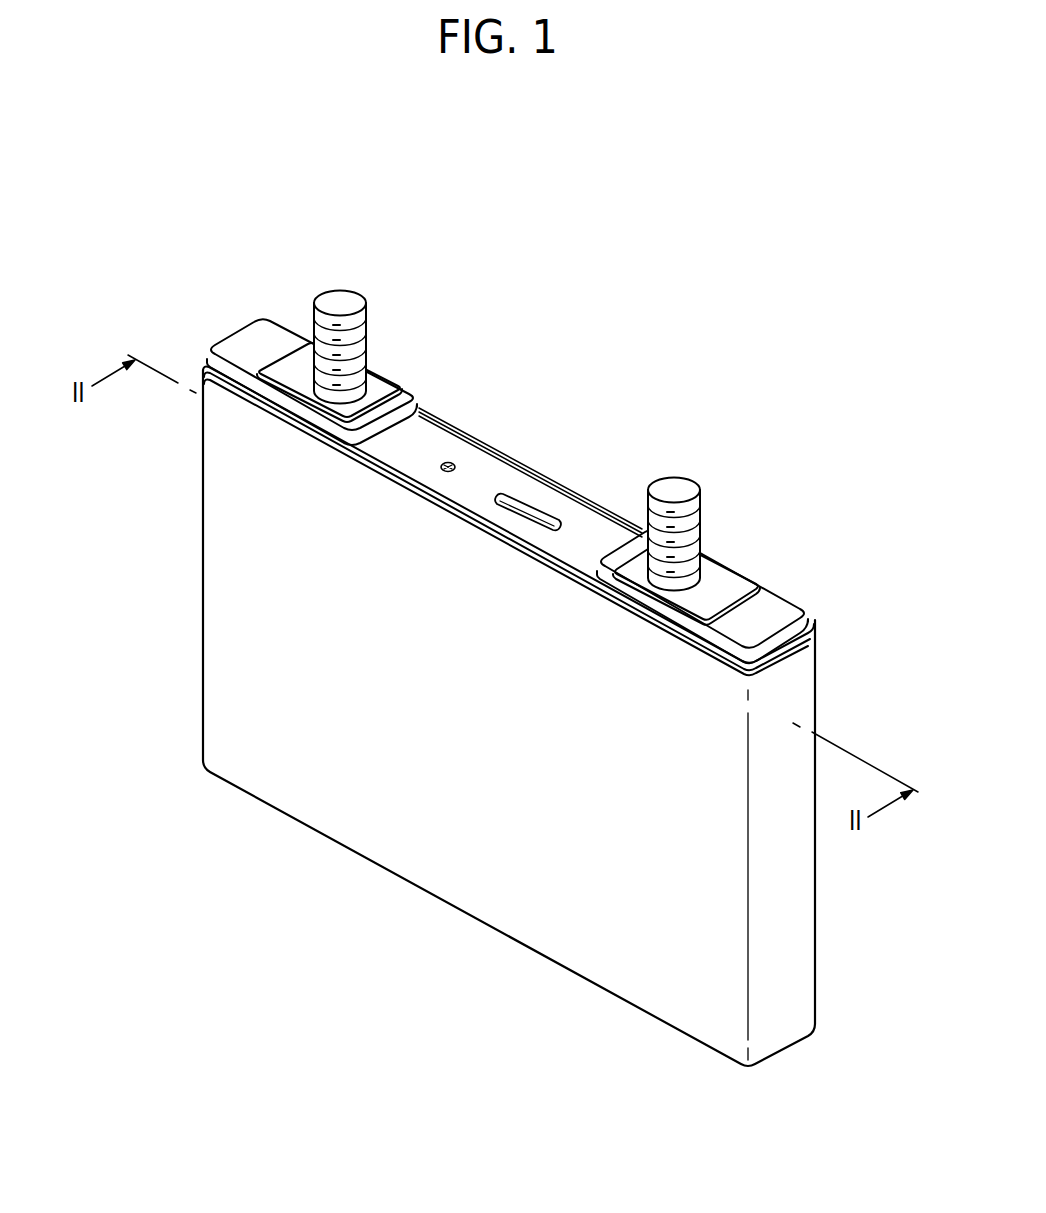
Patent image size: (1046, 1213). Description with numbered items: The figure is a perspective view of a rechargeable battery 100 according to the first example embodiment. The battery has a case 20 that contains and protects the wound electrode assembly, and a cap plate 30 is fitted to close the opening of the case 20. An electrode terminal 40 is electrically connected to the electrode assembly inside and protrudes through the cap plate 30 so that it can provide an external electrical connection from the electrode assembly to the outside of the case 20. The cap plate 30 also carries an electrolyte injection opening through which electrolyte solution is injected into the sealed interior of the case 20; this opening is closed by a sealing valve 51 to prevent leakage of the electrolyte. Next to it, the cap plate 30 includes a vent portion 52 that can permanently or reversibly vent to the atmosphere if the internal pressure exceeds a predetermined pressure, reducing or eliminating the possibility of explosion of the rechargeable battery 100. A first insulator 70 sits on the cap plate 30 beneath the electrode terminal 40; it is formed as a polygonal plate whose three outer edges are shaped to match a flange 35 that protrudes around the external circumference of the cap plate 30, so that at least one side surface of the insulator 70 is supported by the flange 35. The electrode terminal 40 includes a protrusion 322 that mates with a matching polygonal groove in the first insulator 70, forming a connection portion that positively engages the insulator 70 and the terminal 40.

The rechargeable battery 100 is at (580, 278).
The case 20 is at (490, 890).
The cap plate 30 is at (503, 473).
The flange 35 is at (433, 408).
The electrode terminal 40 is at (680, 486).
The sealing valve 51 is at (450, 463).
The vent portion 52 is at (533, 513).
The first insulator 70 is at (793, 607).
The protrusion 322 is at (732, 582).